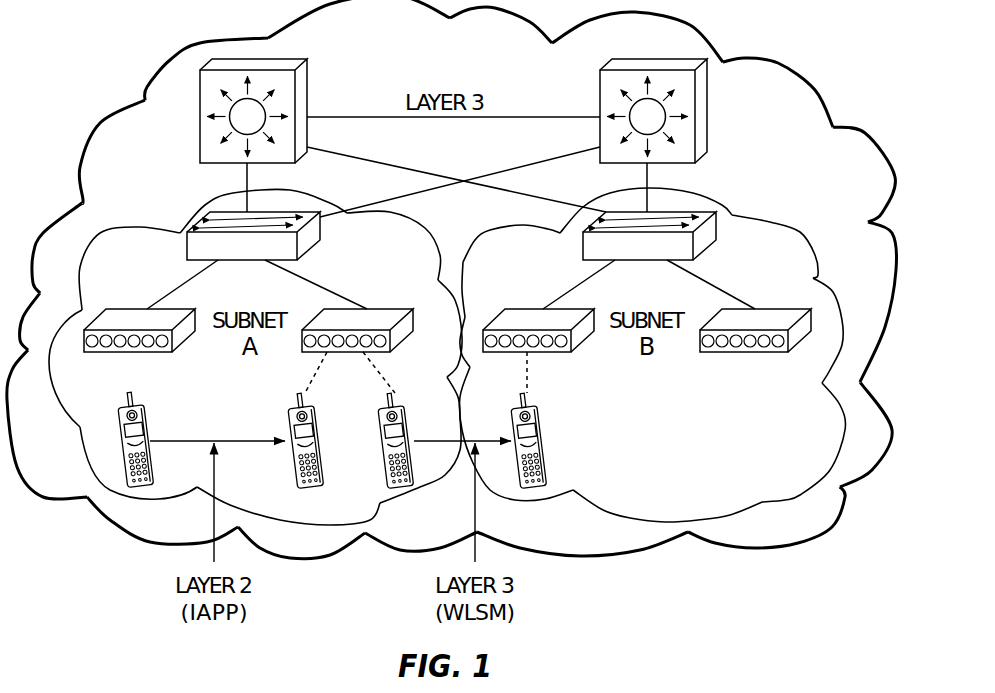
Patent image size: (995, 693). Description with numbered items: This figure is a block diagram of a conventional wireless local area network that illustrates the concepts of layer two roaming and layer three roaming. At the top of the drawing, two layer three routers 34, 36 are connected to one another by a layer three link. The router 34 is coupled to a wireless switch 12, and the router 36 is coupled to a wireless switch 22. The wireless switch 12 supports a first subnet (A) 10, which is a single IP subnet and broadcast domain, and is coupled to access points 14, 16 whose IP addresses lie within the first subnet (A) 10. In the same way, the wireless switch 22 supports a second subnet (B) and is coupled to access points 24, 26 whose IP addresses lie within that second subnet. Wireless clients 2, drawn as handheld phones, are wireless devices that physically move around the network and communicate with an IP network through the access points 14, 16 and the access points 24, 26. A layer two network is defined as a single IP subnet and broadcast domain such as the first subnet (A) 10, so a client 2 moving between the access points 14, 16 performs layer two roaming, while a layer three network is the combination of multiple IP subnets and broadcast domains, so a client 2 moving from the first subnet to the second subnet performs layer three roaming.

The first subnet (A) 10 is at (77, 432).
The wireless client 2 is at (321, 461).
The wireless switch 12 is at (320, 222).
The access point 14 is at (130, 309).
The access point 16 is at (388, 309).
The wireless switch 22 is at (718, 222).
The access point 24 is at (560, 352).
The access point 26 is at (775, 352).
The layer 3 router 34 is at (307, 82).
The layer 3 router 36 is at (707, 92).